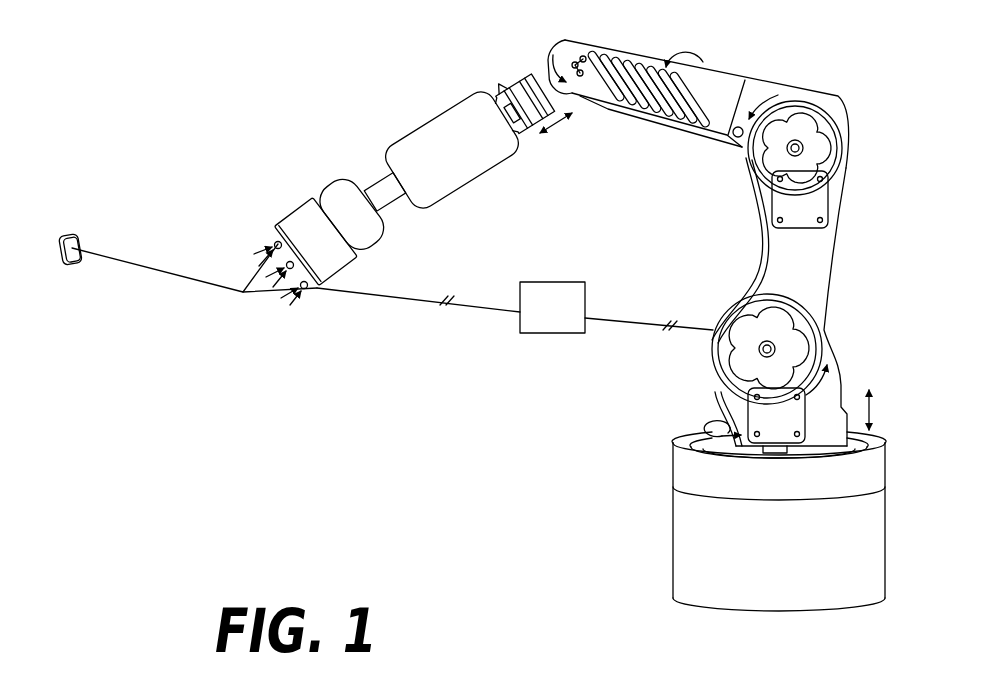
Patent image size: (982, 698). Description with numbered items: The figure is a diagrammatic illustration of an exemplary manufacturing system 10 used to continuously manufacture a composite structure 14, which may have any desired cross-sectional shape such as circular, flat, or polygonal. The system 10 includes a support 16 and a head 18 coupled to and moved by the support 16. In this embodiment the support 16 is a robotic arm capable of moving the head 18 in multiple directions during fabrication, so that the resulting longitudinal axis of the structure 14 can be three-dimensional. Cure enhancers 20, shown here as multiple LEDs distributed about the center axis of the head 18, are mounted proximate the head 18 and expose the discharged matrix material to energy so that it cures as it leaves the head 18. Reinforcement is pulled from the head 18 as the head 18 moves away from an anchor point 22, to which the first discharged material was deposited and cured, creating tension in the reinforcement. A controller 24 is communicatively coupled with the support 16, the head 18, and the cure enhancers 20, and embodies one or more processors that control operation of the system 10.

The system 10 is at (147, 56).
The composite structure 14 is at (173, 274).
The support 16 is at (803, 262).
The head 18 is at (367, 247).
The cure enhancer 20 is at (284, 279).
The anchor point 22 is at (77, 266).
The controller 24 is at (563, 320).